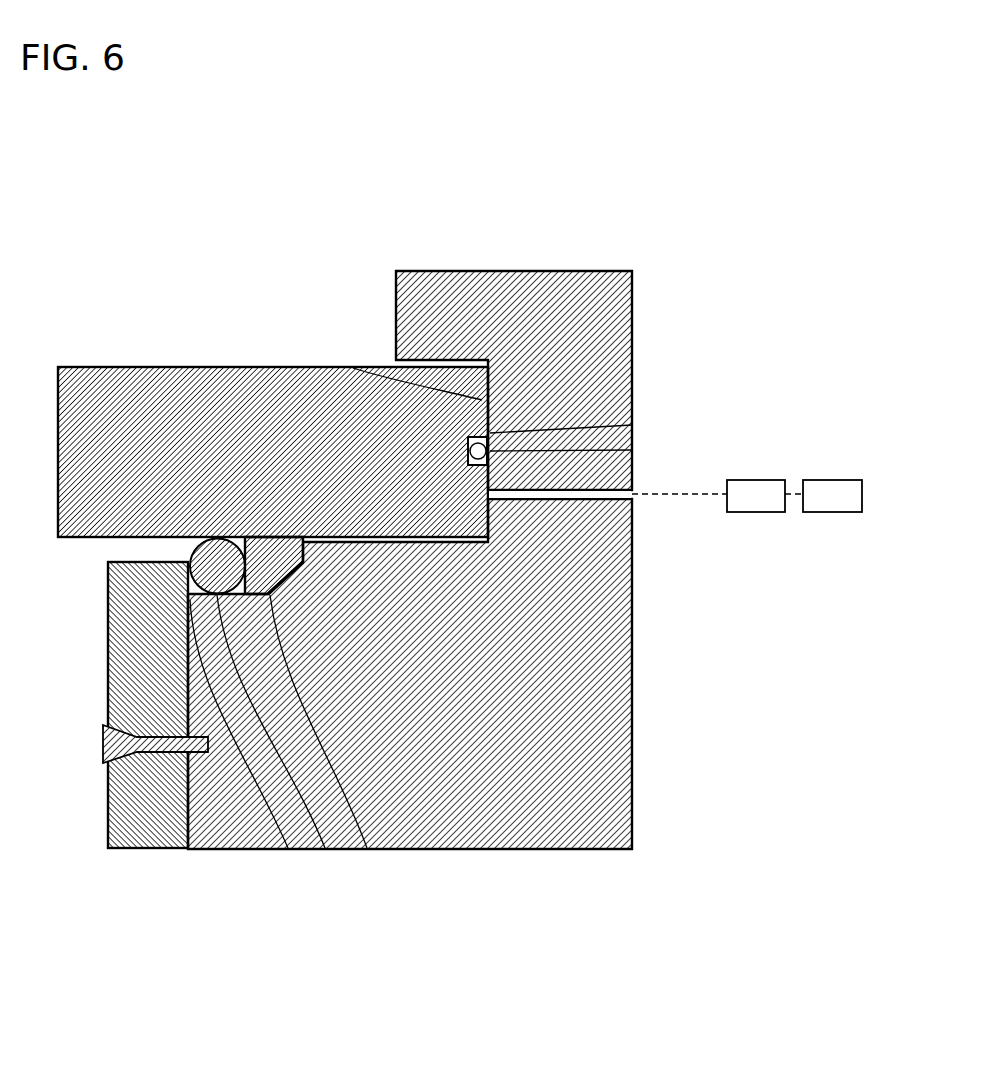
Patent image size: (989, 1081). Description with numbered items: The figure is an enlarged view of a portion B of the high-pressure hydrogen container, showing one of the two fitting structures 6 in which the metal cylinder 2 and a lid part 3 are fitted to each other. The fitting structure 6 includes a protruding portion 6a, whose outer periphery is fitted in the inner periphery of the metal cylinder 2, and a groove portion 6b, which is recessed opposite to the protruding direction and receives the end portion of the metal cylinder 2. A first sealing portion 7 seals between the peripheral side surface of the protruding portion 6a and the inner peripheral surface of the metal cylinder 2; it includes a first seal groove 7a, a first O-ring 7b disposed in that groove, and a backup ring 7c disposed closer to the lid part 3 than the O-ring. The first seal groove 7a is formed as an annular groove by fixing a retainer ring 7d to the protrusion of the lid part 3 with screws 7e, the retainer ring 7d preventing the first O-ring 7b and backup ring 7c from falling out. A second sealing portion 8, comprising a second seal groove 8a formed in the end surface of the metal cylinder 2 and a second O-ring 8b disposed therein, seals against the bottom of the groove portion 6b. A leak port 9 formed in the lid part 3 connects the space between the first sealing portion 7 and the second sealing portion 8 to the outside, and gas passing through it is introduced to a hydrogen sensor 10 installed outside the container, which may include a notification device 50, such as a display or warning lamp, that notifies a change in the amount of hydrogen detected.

The metal cylinder 2 is at (187, 387).
The lid part 3 is at (607, 693).
The fitting structure 6 is at (336, 425).
The protruding portion 6a is at (328, 573).
The groove portion 6b is at (353, 368).
The first sealing portion 7 is at (212, 757).
The first seal groove 7a is at (288, 848).
The first O-ring 7b is at (325, 848).
The backup ring 7c is at (277, 903).
The retainer ring 7d is at (127, 635).
The screw 7e is at (103, 737).
The second sealing portion 8 is at (593, 438).
The second seal groove 8a is at (632, 425).
The second O-ring 8b is at (583, 454).
The leak port 9 is at (578, 496).
The hydrogen sensor 10 is at (745, 482).
The notification device 50 is at (822, 482).
The portion B is at (599, 245).